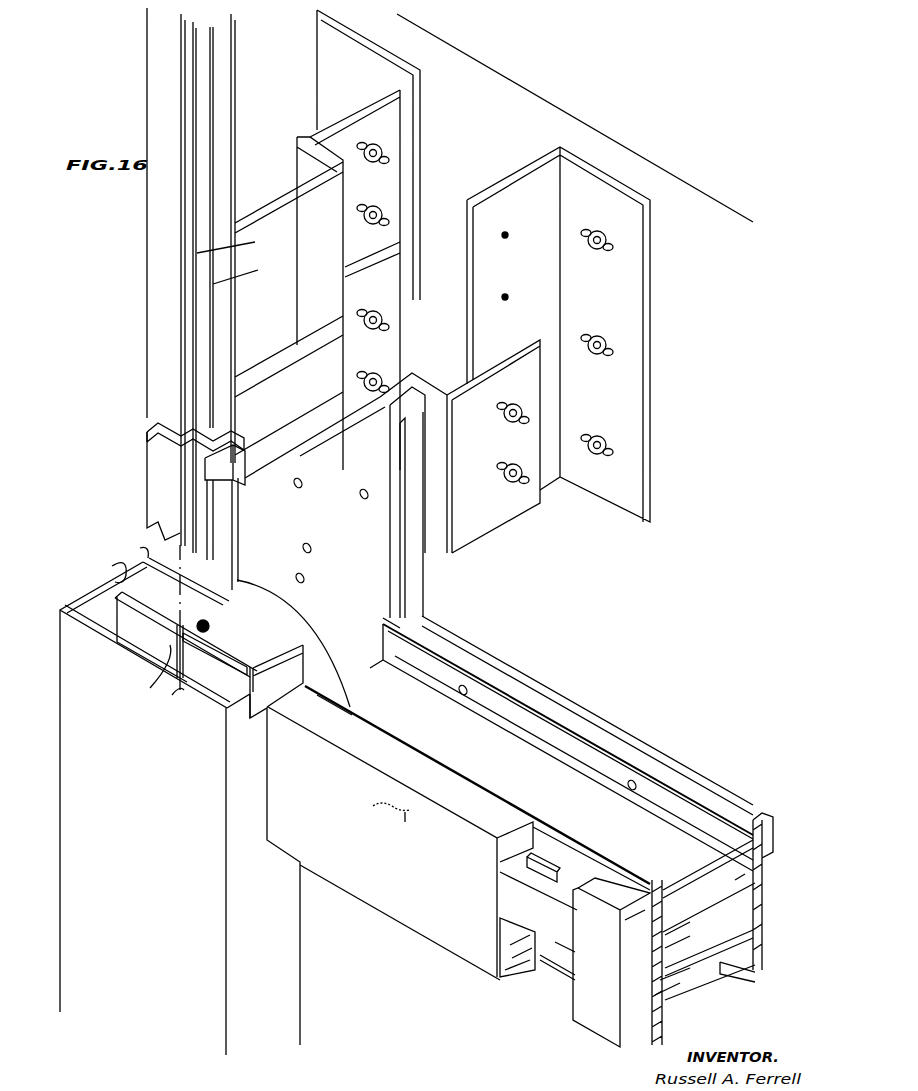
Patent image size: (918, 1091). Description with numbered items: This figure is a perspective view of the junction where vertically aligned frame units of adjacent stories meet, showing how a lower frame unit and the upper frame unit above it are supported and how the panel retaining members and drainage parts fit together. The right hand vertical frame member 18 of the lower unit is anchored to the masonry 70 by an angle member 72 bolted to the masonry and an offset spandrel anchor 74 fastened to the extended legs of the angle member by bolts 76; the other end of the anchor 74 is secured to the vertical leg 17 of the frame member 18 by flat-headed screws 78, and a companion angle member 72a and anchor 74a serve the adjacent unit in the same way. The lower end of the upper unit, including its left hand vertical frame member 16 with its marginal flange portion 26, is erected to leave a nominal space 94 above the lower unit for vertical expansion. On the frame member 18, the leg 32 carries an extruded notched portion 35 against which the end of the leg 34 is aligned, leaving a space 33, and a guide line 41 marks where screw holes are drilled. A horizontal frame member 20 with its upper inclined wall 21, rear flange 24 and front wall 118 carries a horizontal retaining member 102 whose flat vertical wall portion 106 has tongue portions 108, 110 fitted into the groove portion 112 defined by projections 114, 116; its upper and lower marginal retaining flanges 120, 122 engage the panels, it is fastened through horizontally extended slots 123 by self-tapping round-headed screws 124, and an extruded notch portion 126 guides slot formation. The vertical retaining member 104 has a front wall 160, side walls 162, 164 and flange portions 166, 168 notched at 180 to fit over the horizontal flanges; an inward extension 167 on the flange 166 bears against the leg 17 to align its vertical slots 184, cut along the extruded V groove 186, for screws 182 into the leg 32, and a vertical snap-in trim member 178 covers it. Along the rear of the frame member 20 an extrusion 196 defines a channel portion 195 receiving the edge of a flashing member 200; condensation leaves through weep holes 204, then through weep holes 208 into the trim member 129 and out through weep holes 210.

The left hand vertical frame member 16 is at (413, 397).
The vertical leg 17 is at (140, 427).
The right hand vertical frame member 18 is at (151, 288).
The horizontal frame member 20 is at (772, 904).
The upper inclined wall 21 is at (736, 880).
The sill flange 24 is at (720, 832).
The marginal flange portion 26 is at (427, 577).
The leg 32 is at (237, 320).
The nominal space 33 is at (211, 622).
The leg 34 is at (236, 474).
The extruded notched portion 35 is at (245, 271).
The extruded guide line notch 41 is at (236, 241).
The masonry 70 is at (556, 112).
The angle member 72 is at (394, 84).
The anchor bracket 72a is at (652, 346).
The offset spandrel anchor 74 is at (282, 193).
The washer plate 74a is at (330, 418).
The bolt 76 is at (372, 205).
The flat-headed screw 78 is at (358, 495).
The nominal space 94 is at (150, 420).
The horizontal retaining member 102 is at (665, 895).
The vertical retaining member 104 is at (144, 629).
The flat vertical wall portion 106 is at (668, 905).
The tongue portion 108 is at (670, 936).
The tongue portion 110 is at (690, 962).
The groove portion 112 is at (672, 952).
The projection 114 is at (650, 923).
The projection 116 is at (662, 996).
The front wall 118 is at (675, 975).
The upper marginal retaining flange 120 is at (490, 786).
The lower marginal retaining flange 122 is at (655, 1022).
The horizontally extended slot 123 is at (406, 825).
The self-tapping round-headed screw 124 is at (395, 814).
The extruded notch portion 126 is at (497, 882).
The trim member 129 is at (410, 928).
The front wall 160 is at (153, 654).
The left-hand side wall 162 is at (115, 565).
The side wall 164 is at (262, 702).
The flange portion 166 is at (142, 548).
The inward extension 167 is at (170, 570).
The flange portion 168 is at (310, 652).
The vertical snap-in trim member 178 is at (90, 592).
The notch 180 is at (335, 660).
The self-tapping round-headed screw 182 is at (152, 682).
The vertical slot 184 is at (188, 662).
The extruded V groove 186 is at (174, 695).
The channel portion 195 is at (638, 748).
The horizontally extended extrusion 196 is at (588, 706).
The flashing member 200 is at (545, 860).
The weep hole 204 is at (460, 696).
The weep hole 208 is at (490, 955).
The weep hole 210 is at (515, 982).